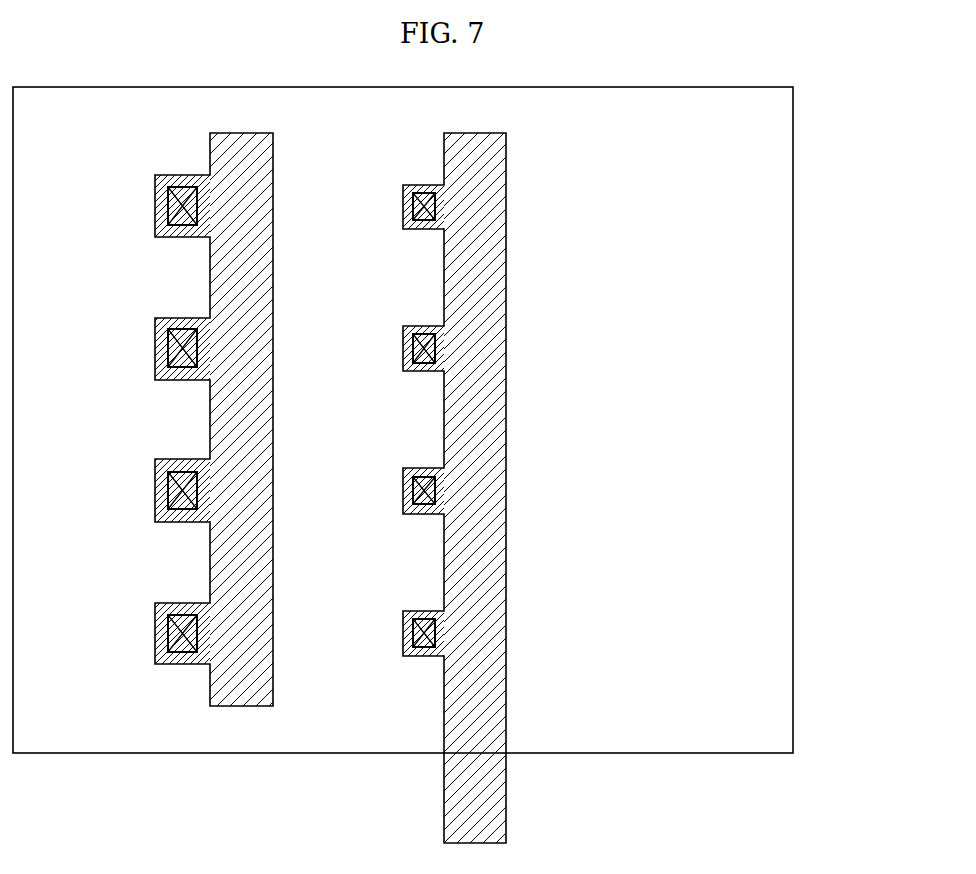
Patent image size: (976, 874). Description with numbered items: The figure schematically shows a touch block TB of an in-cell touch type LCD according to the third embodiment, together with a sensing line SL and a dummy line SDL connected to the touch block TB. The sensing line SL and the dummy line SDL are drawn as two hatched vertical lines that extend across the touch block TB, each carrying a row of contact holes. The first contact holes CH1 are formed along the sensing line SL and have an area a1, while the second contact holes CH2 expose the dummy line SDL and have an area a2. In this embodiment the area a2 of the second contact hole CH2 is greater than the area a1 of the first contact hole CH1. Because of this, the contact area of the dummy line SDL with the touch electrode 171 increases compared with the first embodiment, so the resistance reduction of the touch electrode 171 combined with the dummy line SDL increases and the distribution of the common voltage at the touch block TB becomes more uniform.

The touch block TB is at (444, 420).
The touch electrode 171 is at (773, 420).
The dummy line SDL is at (225, 404).
The sensing line SL is at (458, 475).
The first contact hole CH1 is at (424, 193).
The second contact hole CH2 is at (183, 188).
The area of the first contact hole a1 is at (386, 168).
The area of the second contact hole a2 is at (143, 169).